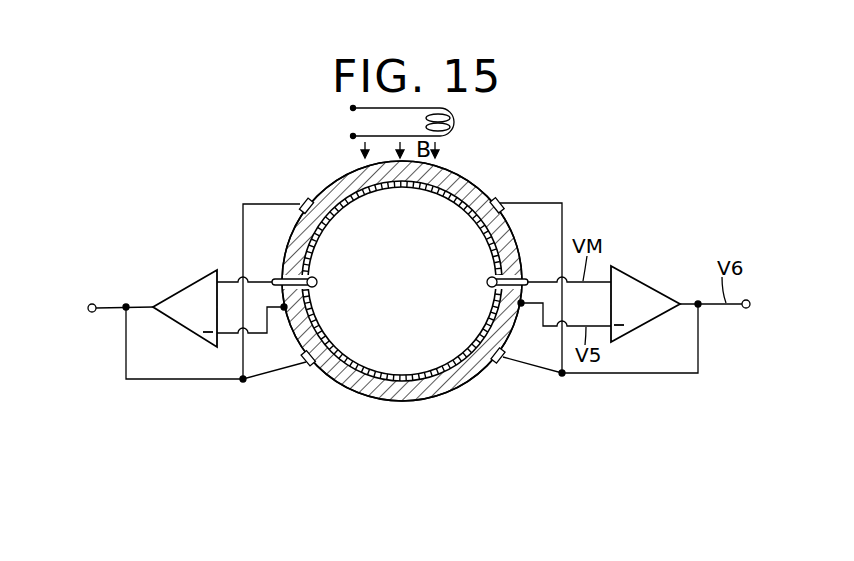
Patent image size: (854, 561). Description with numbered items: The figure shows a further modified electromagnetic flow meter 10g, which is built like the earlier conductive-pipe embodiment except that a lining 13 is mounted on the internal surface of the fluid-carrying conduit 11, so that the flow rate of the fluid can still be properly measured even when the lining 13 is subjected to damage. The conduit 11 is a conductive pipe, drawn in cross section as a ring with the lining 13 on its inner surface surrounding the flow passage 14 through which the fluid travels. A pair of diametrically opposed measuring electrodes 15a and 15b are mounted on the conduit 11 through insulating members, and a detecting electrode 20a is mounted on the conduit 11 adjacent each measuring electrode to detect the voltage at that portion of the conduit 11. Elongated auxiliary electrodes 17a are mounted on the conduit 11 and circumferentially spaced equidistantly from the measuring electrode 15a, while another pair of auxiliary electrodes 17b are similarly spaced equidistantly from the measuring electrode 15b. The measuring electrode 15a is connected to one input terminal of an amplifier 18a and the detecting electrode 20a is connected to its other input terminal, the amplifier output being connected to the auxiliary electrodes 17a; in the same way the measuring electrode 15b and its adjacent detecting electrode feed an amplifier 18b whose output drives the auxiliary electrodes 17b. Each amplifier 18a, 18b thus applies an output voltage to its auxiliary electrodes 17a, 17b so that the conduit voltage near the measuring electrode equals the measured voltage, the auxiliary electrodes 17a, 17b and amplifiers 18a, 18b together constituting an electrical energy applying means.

The electromagnetic flow meter 10g is at (480, 168).
The fluid-carrying conduit 11 is at (342, 184).
The lining 13 is at (397, 188).
The flow passage 14 is at (423, 348).
The measuring electrode 15a is at (490, 281).
The measuring electrode 15b is at (318, 282).
The auxiliary electrode 17a is at (502, 200).
The auxiliary electrode 17b is at (303, 200).
The amplifier 18a is at (648, 281).
The amplifier 18b is at (177, 290).
The detecting electrode 20a is at (284, 308).